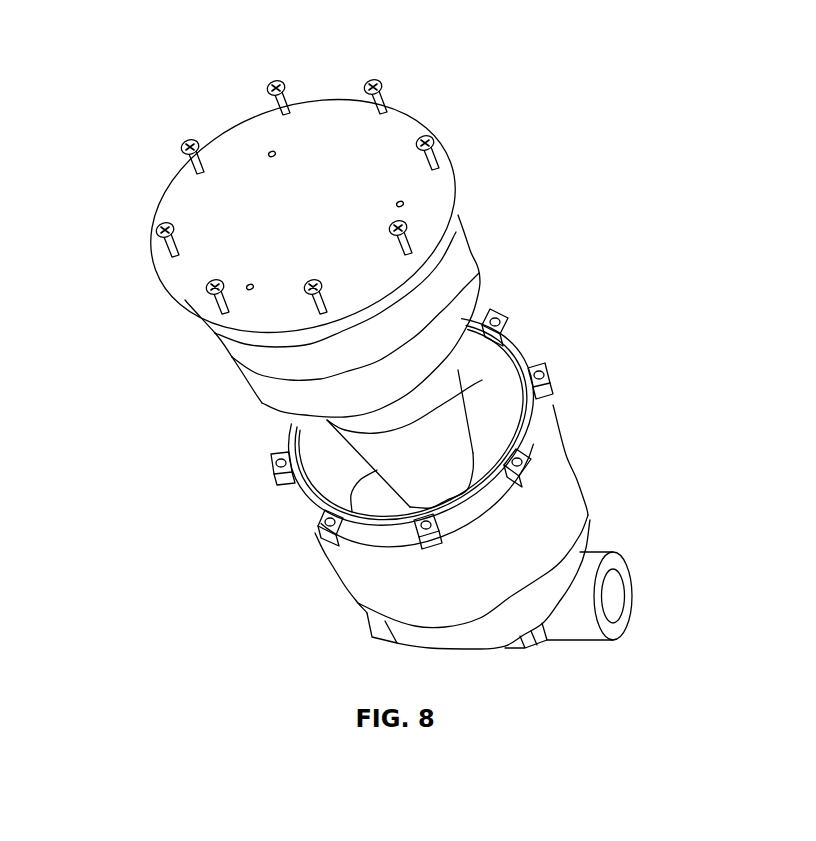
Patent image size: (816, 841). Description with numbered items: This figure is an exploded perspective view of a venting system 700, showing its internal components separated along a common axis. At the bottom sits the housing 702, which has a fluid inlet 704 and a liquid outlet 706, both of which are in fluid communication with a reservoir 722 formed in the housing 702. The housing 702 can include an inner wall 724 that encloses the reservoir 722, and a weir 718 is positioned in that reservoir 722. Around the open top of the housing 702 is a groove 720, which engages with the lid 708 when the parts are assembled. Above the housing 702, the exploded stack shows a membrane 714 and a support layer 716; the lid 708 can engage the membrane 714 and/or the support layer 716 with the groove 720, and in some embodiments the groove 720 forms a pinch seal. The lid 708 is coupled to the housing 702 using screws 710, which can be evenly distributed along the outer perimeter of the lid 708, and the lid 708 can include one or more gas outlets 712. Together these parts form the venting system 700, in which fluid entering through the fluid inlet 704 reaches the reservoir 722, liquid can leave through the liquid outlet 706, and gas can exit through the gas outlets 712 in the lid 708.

The venting system 700 is at (147, 90).
The housing 702 is at (557, 475).
The fluid inlet 704 is at (618, 597).
The liquid outlet 706 is at (380, 628).
The lid 708 is at (405, 130).
The screws 710 is at (210, 290).
The gas outlets 712 is at (253, 283).
The membrane 714 is at (460, 315).
The support layer 716 is at (450, 263).
The weir 718 is at (445, 428).
The groove 720 is at (300, 492).
The reservoir 722 is at (345, 485).
The inner wall 724 is at (320, 451).